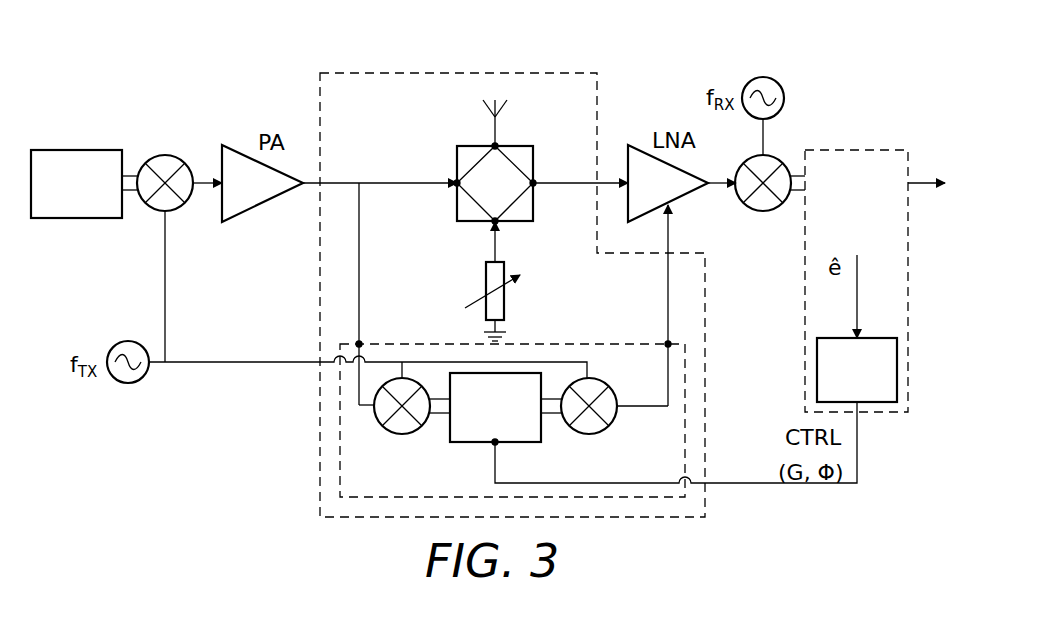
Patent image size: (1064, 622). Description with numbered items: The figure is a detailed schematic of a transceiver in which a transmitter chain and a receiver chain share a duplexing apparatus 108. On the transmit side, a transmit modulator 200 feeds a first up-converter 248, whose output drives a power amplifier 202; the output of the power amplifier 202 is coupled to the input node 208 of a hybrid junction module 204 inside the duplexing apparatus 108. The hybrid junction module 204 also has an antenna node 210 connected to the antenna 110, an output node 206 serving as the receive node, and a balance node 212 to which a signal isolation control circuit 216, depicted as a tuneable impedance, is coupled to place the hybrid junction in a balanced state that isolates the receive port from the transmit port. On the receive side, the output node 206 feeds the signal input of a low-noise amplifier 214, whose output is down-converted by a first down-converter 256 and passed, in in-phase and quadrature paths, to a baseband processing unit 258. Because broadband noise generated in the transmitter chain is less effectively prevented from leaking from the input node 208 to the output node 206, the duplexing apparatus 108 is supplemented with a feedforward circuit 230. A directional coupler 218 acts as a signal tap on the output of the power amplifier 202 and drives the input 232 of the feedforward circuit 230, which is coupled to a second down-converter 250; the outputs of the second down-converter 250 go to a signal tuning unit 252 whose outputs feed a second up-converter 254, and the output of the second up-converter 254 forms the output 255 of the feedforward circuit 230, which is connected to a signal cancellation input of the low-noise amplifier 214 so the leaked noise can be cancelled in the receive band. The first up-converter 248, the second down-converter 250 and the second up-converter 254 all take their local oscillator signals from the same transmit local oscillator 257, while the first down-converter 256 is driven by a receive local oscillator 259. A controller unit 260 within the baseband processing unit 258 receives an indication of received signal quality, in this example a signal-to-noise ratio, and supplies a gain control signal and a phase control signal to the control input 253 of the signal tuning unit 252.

The transmit modulator 200 is at (84, 184).
The first up-converter 248 is at (165, 155).
The power amplifier 202 is at (262, 183).
The duplexing apparatus 108 is at (573, 73).
The directional coupler 218 is at (373, 186).
The input of the feedforward circuit 232 is at (361, 341).
The antenna node 210 is at (493, 145).
The input node 208 is at (455, 181).
The output node 206 is at (536, 186).
The hybrid junction module 204 is at (470, 226).
The antenna 110 is at (497, 118).
The balance node 212 is at (500, 226).
The signal isolation control circuit 216 is at (520, 278).
The low-noise amplifier 214 is at (668, 183).
The output of the feedforward circuit 255 is at (667, 342).
The first down-converter 256 is at (763, 212).
The receive local oscillator 259 is at (763, 77).
The baseband processing unit 258 is at (856, 281).
The controller unit 260 is at (857, 370).
The control input 253 is at (492, 445).
The feedforward circuit 230 is at (340, 437).
The second down-converter 250 is at (393, 431).
The signal tuning unit 252 is at (495, 407).
The second up-converter 254 is at (608, 429).
The transmit local oscillator 257 is at (128, 383).